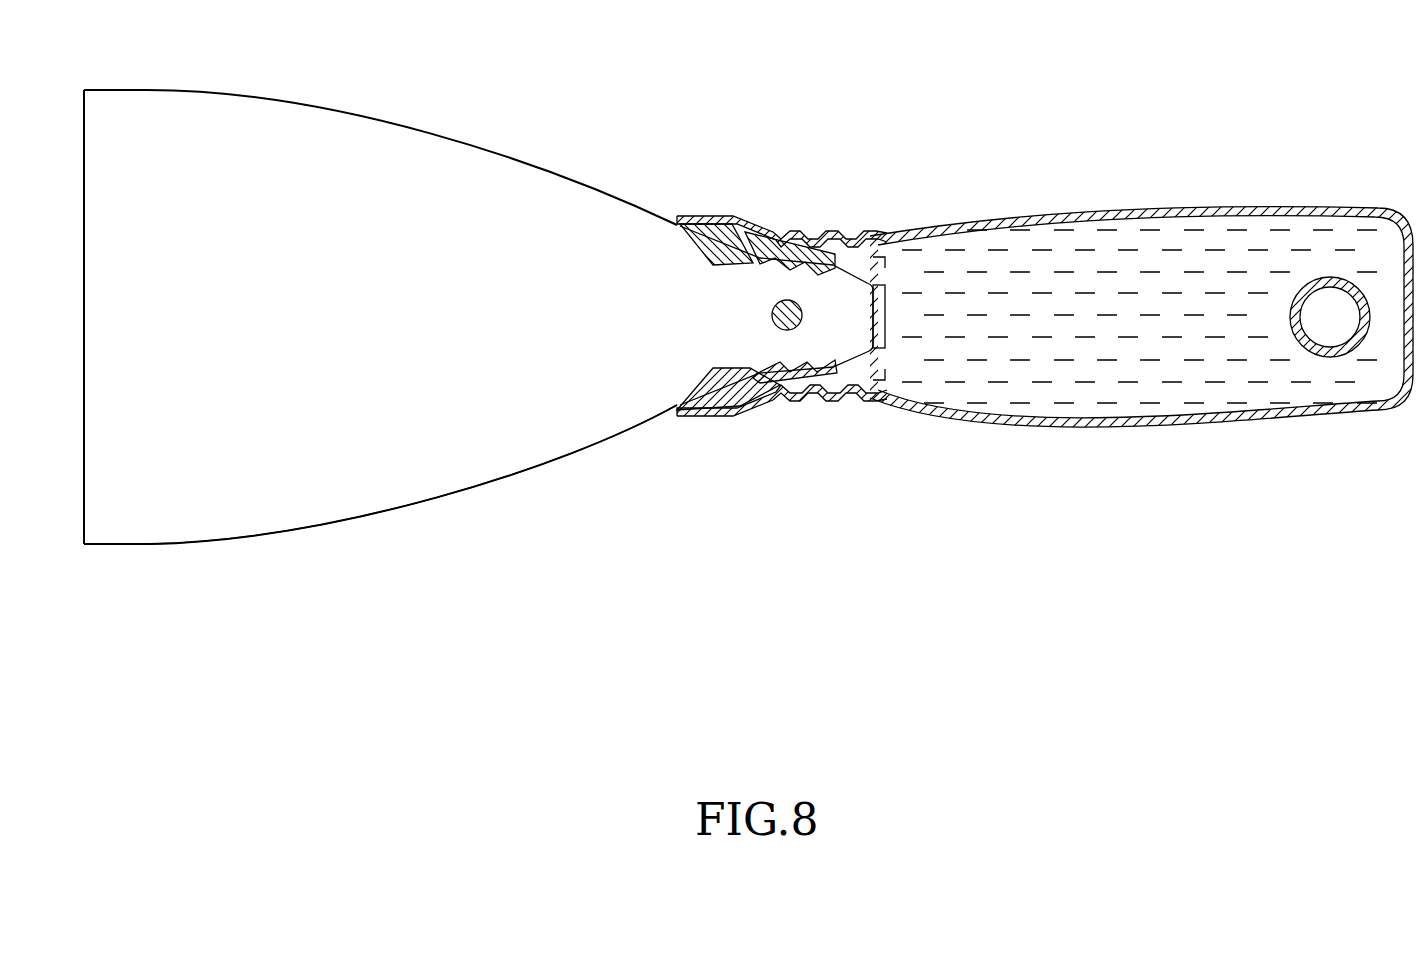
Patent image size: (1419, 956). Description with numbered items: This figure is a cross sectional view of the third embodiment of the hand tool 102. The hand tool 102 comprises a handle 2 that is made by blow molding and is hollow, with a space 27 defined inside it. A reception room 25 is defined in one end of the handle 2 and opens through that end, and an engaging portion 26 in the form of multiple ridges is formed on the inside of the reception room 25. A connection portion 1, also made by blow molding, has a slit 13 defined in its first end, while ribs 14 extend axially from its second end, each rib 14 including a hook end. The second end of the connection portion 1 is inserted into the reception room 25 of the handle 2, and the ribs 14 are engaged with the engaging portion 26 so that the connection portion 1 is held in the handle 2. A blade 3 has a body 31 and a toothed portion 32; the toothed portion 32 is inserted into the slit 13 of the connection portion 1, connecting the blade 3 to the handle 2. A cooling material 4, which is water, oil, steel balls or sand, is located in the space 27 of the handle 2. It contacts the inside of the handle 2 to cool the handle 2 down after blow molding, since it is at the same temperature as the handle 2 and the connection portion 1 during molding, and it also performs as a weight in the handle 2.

The connection portion 1 is at (755, 405).
The handle 2 is at (1102, 428).
The blade 3 is at (408, 128).
The cooling material 4 is at (1213, 253).
The slit 13 is at (700, 375).
The rib 14 is at (887, 258).
The reception room 25 is at (703, 253).
The engaging portion 26 is at (887, 407).
The space 27 is at (1363, 392).
The body 31 is at (378, 497).
The toothed portion 32 is at (818, 250).
The hand tool 102 is at (748, 135).